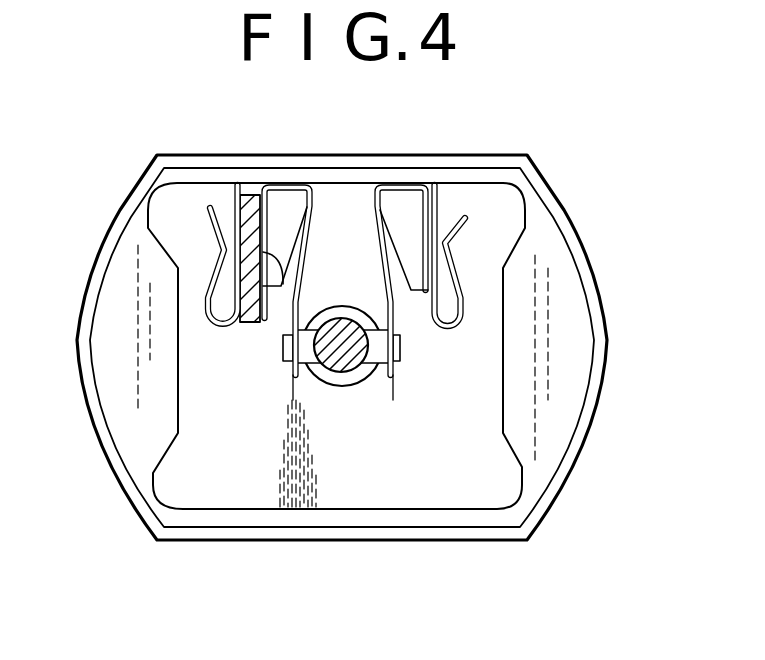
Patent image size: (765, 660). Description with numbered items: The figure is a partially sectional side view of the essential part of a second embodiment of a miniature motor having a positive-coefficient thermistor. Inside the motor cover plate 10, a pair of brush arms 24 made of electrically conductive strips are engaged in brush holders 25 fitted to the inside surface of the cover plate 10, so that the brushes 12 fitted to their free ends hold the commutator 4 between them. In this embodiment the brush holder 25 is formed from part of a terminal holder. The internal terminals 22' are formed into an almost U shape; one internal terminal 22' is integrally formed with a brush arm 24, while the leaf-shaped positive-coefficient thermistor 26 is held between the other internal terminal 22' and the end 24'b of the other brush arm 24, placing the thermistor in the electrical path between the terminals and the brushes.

The motor cover plate 10 is at (549, 191).
The internal terminal 22' is at (334, 215).
The positive-coefficient thermistor 26 is at (250, 197).
The brush holder 25 is at (293, 201).
The end of brush arm 24'b is at (255, 301).
The brush arm 24 is at (418, 301).
The commutator 4 is at (348, 384).
The brush 12 is at (377, 357).